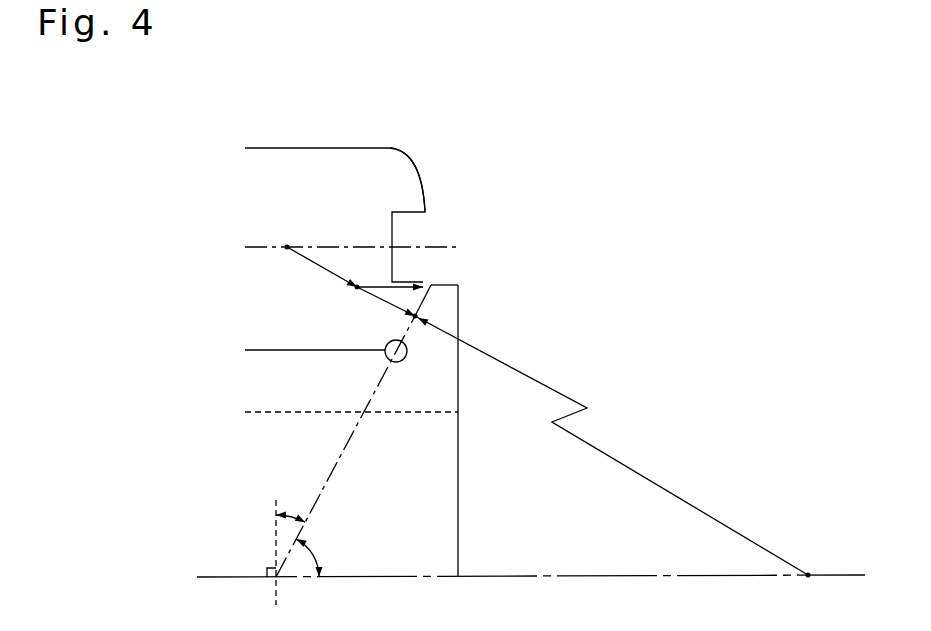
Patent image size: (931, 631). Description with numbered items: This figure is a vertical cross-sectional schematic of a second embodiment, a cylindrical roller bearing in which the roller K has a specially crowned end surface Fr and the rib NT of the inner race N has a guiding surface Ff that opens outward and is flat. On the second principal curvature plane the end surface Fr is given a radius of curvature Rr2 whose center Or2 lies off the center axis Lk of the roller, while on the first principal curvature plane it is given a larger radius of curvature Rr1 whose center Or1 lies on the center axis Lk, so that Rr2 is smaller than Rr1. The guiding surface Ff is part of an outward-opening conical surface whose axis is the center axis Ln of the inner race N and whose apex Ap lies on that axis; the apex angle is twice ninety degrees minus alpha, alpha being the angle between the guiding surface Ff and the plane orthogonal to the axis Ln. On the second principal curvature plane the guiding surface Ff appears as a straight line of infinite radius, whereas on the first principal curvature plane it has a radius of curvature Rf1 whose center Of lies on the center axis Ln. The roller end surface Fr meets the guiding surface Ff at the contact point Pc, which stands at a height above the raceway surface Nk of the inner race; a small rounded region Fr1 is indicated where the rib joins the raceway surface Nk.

The roller K is at (335, 158).
The end surface of the roller Fr is at (422, 192).
The center axis of the roller Lk is at (266, 247).
The center of radius of curvature Rr2 Or2 is at (289, 235).
The radius of curvature of roller end surface on first principal curvature plane Rr1 is at (317, 267).
The radius of curvature of roller end surface on second principal curvature plane Rr2 is at (386, 275).
The center of radius of curvature Rr1 Or1 is at (377, 302).
The guiding surface of the rib Ff is at (431, 285).
The gear tooth NT is at (447, 298).
The inner race N is at (437, 480).
The contact point Pc is at (418, 314).
The fillet (root rounding) Fr1 is at (386, 344).
The raceway surface of the inner race Nk is at (283, 350).
The center axis of the inner race Ln is at (550, 576).
The apex Ap is at (329, 464).
The radius of curvature of guiding surface on first principal curvature plane Rf1 is at (611, 445).
The center of radius of curvature Rf1 Of is at (804, 590).